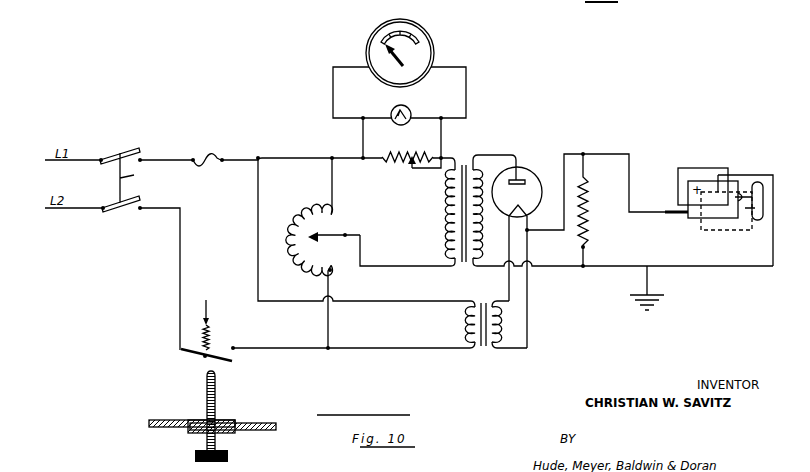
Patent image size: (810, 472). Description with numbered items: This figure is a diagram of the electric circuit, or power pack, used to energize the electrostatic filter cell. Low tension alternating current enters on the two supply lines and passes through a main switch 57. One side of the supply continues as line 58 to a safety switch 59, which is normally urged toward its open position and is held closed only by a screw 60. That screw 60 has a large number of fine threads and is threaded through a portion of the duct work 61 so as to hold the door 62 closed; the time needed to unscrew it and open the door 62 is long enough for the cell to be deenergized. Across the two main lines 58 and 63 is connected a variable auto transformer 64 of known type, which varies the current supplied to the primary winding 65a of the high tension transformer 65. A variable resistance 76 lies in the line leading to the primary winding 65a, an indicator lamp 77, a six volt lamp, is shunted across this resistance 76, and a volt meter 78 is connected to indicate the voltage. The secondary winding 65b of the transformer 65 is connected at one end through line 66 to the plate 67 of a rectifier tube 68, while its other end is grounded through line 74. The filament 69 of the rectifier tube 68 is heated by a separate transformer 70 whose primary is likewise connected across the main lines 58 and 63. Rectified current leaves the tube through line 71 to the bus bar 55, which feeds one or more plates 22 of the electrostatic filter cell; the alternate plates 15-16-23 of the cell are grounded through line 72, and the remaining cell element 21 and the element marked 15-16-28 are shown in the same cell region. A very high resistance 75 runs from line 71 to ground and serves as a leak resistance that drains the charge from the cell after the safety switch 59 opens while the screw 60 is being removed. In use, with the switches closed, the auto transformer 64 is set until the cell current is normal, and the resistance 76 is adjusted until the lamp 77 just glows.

The main switch 57 is at (120, 152).
The line 58 is at (181, 307).
The safety switch 59 is at (200, 358).
The screw 60 is at (216, 395).
The duct work 61 is at (160, 428).
The door 62 is at (270, 431).
The line 63 is at (277, 157).
The variable auto transformer 64 is at (309, 217).
The high tension transformer 65 is at (464, 153).
The primary winding 65a is at (452, 222).
The secondary winding 65b is at (481, 188).
The line 66 is at (506, 152).
The plate 67 is at (523, 177).
The rectifier tube 68 is at (538, 203).
The filament 69 is at (508, 211).
The transformer 70 is at (484, 350).
The line 71 is at (620, 154).
The line 72 is at (746, 266).
The line 74 is at (567, 267).
The high resistance 75 is at (590, 208).
The variable resistance 76 is at (415, 150).
The indicator lamp 77 is at (411, 108).
The volt meter 78 is at (386, 23).
The bus bar 55 is at (680, 214).
The electrode 21 is at (767, 197).
The plates 22 is at (743, 186).
The alternate plates 15-16-23 is at (680, 168).
The cell 15-16-28 is at (724, 226).